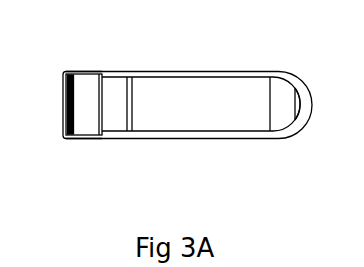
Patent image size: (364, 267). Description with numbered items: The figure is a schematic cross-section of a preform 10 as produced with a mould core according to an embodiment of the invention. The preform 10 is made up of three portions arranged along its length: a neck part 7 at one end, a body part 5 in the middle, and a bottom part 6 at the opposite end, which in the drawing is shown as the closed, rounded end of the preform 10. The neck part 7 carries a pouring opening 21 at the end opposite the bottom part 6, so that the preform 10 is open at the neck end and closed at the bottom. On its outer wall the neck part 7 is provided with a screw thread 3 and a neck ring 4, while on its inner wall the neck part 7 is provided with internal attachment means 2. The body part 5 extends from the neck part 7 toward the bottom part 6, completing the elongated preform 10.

The preform 10 is at (262, 50).
The internal attachment means 2 is at (65, 91).
The pouring opening 21 is at (65, 115).
The screw thread 3 is at (82, 71).
The neck ring 4 is at (85, 72).
The body part 5 is at (202, 132).
The bottom part 6 is at (312, 104).
The neck part 7 is at (85, 139).